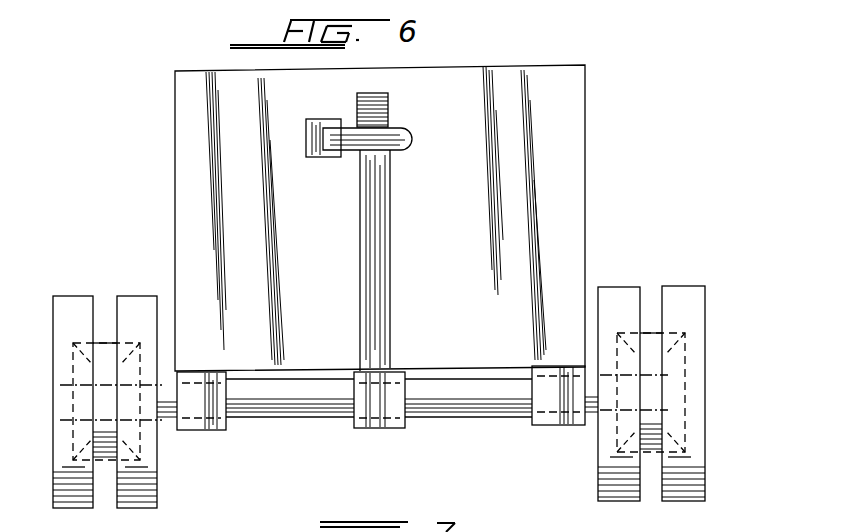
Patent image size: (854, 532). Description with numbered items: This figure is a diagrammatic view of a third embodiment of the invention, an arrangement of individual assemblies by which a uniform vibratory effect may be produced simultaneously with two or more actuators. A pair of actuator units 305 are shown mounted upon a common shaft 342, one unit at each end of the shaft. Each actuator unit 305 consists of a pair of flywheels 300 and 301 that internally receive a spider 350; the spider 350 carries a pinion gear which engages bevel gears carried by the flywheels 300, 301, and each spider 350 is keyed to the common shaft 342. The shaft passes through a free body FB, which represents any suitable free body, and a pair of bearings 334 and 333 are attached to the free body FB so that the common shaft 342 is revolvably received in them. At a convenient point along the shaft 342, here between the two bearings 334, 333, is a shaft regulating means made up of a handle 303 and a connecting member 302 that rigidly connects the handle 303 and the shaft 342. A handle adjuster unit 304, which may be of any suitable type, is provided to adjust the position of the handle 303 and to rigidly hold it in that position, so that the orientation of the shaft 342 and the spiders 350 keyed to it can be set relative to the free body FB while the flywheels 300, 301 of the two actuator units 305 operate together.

The free body FB is at (565, 122).
The handle 303 is at (380, 215).
The handle adjuster unit 304 is at (325, 125).
The connecting member 302 is at (375, 425).
The bearing 334 is at (200, 423).
The bearing 333 is at (562, 420).
The common shaft 342 is at (495, 405).
The actuator unit 305 is at (402, 383).
The flywheel 300 is at (137, 507).
The flywheel 301 is at (68, 500).
The spider 350 is at (645, 333).